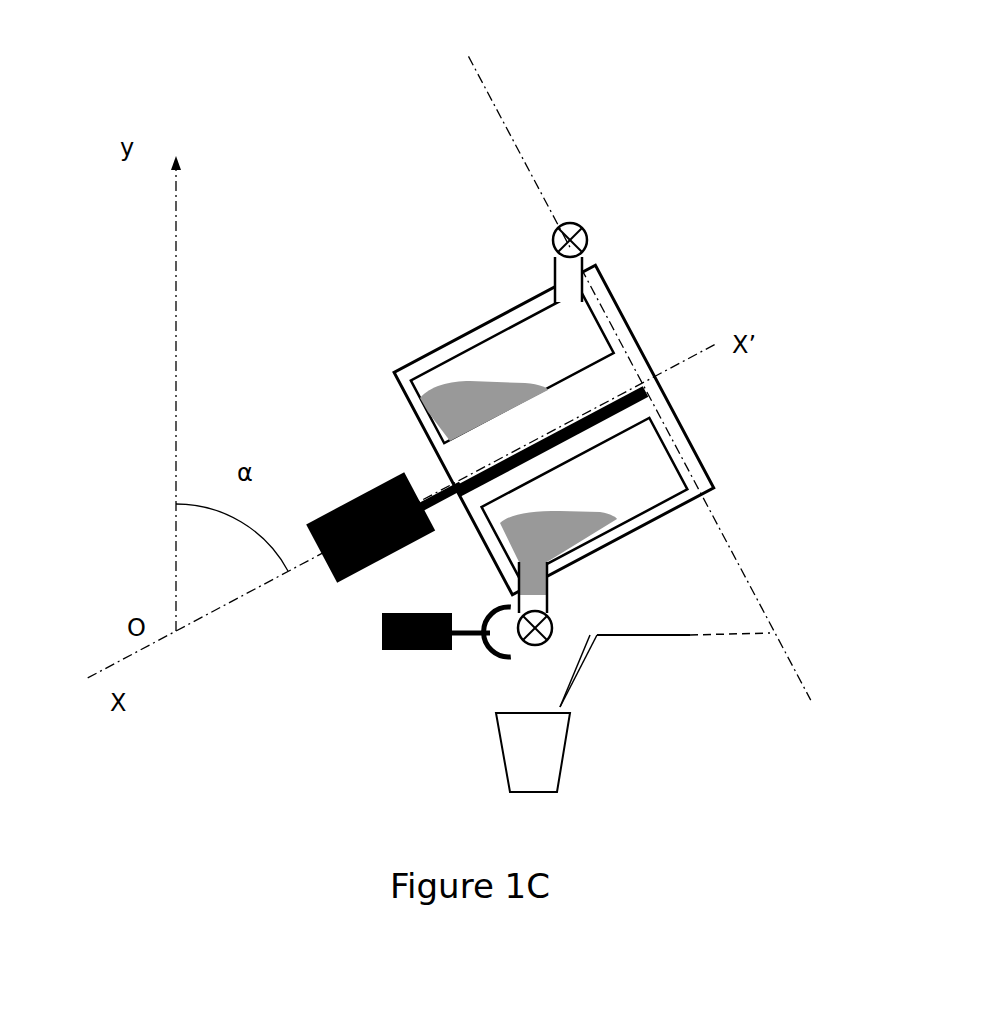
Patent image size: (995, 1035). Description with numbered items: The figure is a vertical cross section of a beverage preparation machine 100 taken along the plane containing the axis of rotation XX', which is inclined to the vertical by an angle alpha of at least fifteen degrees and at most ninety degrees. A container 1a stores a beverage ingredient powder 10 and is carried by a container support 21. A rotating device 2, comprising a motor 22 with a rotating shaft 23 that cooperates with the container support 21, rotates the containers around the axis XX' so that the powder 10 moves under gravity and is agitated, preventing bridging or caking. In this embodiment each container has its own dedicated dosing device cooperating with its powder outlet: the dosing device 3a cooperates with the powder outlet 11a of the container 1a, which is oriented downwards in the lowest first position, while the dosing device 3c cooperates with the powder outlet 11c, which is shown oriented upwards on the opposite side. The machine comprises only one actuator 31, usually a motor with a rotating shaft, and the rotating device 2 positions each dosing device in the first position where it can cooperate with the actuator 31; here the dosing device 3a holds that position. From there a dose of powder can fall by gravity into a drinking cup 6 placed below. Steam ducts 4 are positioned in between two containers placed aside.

The beverage preparation machine 100 is at (558, 129).
The container 1a is at (554, 430).
The rotating device 2 is at (481, 468).
The container support 21 is at (554, 430).
The motor 22 is at (370, 527).
The rotating shaft 23 is at (533, 449).
The beverage ingredient powder 10 is at (496, 383).
The powder outlet 11c is at (590, 260).
The dosing device 3c is at (590, 213).
The powder outlet 11a is at (552, 587).
The dosing device 3a is at (565, 623).
The actuator 31 is at (485, 645).
The steam duct 4 is at (593, 667).
The drinking cup 6 is at (588, 765).